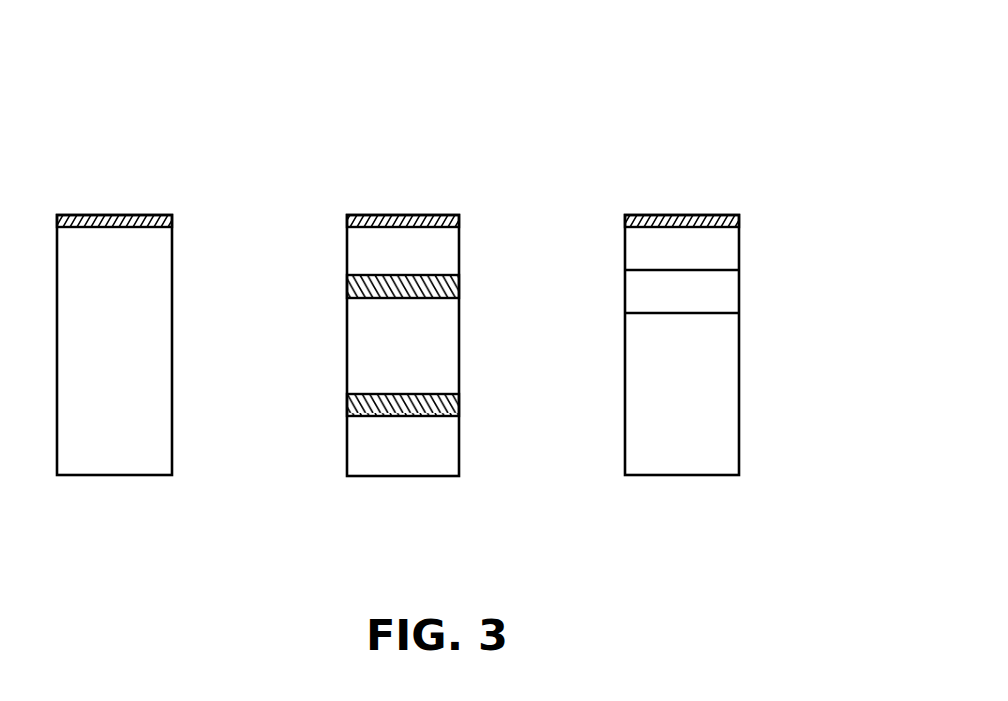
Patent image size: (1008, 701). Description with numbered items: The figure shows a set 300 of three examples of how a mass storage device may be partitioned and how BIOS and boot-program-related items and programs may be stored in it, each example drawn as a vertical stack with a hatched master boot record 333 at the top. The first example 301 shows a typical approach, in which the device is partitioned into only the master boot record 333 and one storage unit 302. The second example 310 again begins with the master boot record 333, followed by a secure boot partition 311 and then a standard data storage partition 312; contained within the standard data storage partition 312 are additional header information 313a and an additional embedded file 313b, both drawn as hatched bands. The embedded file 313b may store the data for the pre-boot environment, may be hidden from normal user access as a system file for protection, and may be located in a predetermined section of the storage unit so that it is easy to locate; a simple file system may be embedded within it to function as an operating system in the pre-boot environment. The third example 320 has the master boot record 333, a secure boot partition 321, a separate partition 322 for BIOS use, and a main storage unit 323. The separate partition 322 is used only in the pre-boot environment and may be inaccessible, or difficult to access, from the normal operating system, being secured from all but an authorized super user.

The set of examples 300 is at (709, 67).
The example 301 is at (138, 168).
The storage unit 302 is at (134, 267).
The example 310 is at (425, 168).
The secure boot partition 311 is at (423, 262).
The standard data storage partition 312 is at (423, 334).
The additional header information 313a is at (459, 283).
The additional embedded file 313b is at (459, 401).
The example 320 is at (704, 167).
The secure boot partition 321 is at (703, 262).
The separate partition 322 is at (703, 304).
The main storage unit 323 is at (703, 357).
The master boot record 333 is at (172, 219).